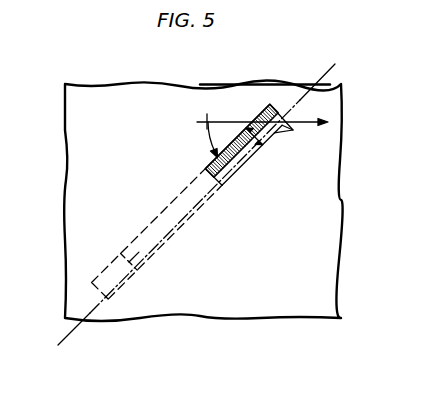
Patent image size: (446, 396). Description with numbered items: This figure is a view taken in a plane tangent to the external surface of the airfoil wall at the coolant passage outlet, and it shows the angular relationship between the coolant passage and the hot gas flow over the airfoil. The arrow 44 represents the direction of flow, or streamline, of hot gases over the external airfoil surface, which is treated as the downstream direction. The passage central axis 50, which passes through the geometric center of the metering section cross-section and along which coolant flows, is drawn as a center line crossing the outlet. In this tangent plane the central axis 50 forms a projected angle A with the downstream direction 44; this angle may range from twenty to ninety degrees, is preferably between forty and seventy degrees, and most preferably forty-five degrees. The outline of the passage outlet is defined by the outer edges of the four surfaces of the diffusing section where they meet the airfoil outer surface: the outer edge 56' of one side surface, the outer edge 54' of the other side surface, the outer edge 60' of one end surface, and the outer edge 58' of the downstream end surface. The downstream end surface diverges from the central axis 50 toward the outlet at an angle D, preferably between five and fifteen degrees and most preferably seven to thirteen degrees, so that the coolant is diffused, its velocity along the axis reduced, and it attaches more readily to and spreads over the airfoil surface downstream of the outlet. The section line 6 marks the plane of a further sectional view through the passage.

The passage central axis 50 is at (301, 90).
The outer edge of end surface 60' is at (249, 139).
The outer edge of side surface 56' is at (224, 140).
The outer edge of side surface 54' is at (293, 144).
The outer edge of downstream end surface 58' is at (177, 230).
The direction of flow of hot gases 44 is at (306, 127).
The section line 6- 6 is at (326, 55).
The projected angle A is at (209, 128).
The angle D is at (266, 150).